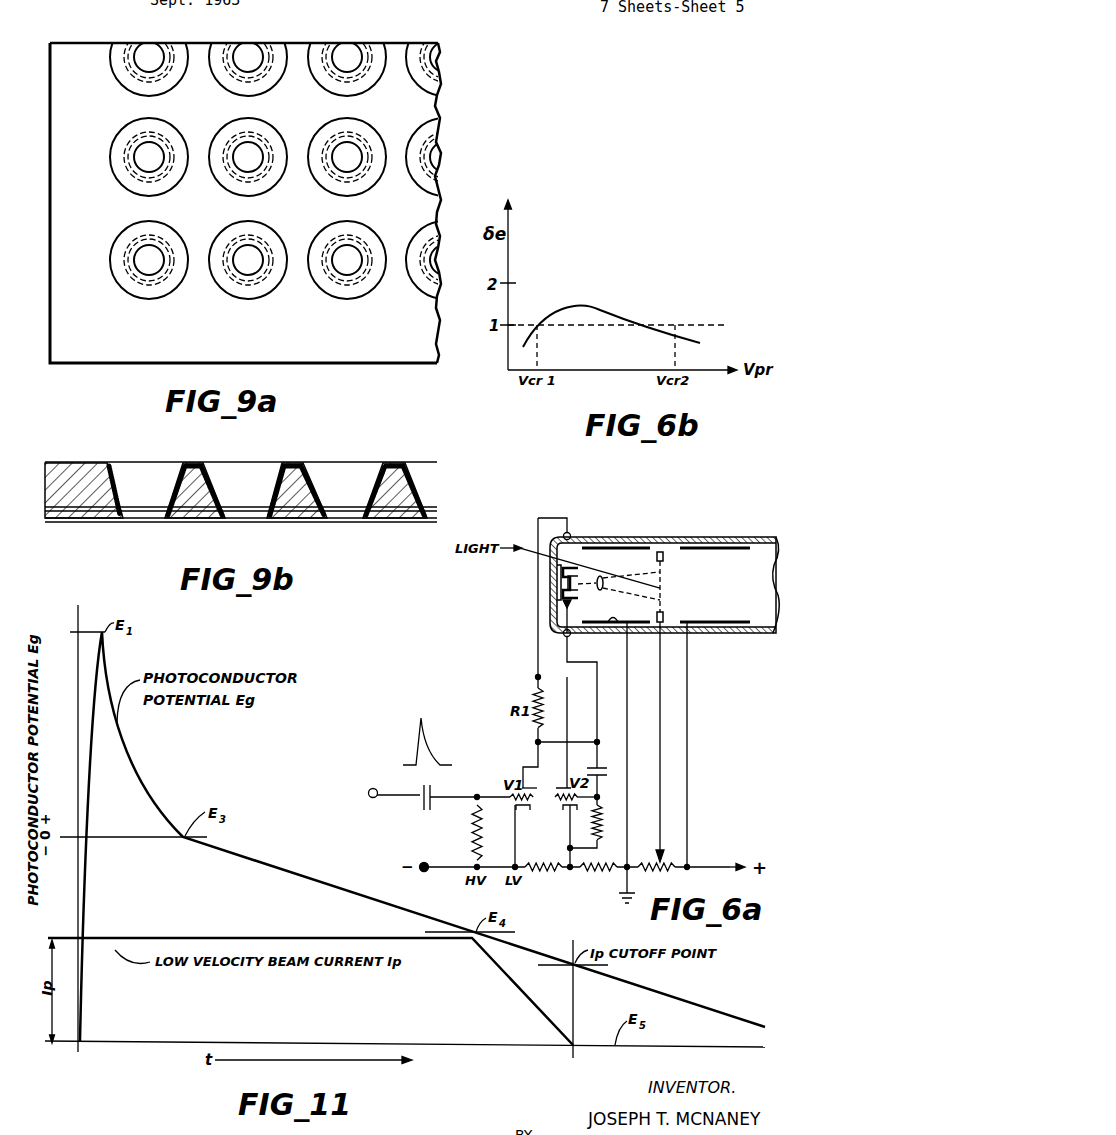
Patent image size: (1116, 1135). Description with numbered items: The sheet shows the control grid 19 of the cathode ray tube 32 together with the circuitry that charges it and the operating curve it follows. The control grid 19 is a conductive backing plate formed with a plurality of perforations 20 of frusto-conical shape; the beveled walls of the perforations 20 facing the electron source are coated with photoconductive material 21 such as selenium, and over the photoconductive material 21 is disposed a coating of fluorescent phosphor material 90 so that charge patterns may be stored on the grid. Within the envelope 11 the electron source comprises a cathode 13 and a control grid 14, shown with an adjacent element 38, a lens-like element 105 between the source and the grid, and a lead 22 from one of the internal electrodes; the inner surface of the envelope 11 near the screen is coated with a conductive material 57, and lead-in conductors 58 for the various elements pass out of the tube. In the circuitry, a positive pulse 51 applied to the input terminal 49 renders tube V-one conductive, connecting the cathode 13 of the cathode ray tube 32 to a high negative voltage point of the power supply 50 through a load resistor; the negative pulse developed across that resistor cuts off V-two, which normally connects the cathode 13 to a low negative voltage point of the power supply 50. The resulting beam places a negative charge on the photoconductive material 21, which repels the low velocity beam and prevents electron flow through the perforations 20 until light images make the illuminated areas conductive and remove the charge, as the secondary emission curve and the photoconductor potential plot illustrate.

In FIG. 9A, the perforations 20 is at (343, 260).
In FIG. 9B, the perforations 20 is at (352, 505).
In FIG. 9A, the control grid 19 is at (385, 347).
In FIG. 9B, the control grid 19 is at (192, 518).
In FIG. 6A, the control grid 19 is at (663, 613).
In FIG. 9B, the photoconductive material 21 is at (268, 518).
In FIG. 9B, the fluorescent phosphor material 90 is at (276, 480).
In FIG. 6A, the envelope 11 is at (672, 540).
In FIG. 6A, the conductive material 57 is at (712, 550).
In FIG. 6A, the cathode 13 is at (565, 583).
In FIG. 6A, the window 38 is at (552, 568).
In FIG. 6A, the control grid 14 is at (581, 615).
In FIG. 6A, the lens 105 is at (600, 590).
In FIG. 6A, the lead-in conductors 58 is at (571, 531).
In FIG. 6A, the collector lead 22 is at (619, 627).
In FIG. 6A, the cathode ray tube 32 is at (738, 658).
In FIG. 6A, the positive pulse 51 is at (430, 748).
In FIG. 6A, the input terminal 49 is at (373, 798).
In FIG. 6A, the power supply 50 is at (706, 890).